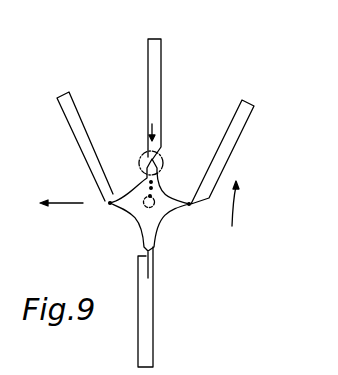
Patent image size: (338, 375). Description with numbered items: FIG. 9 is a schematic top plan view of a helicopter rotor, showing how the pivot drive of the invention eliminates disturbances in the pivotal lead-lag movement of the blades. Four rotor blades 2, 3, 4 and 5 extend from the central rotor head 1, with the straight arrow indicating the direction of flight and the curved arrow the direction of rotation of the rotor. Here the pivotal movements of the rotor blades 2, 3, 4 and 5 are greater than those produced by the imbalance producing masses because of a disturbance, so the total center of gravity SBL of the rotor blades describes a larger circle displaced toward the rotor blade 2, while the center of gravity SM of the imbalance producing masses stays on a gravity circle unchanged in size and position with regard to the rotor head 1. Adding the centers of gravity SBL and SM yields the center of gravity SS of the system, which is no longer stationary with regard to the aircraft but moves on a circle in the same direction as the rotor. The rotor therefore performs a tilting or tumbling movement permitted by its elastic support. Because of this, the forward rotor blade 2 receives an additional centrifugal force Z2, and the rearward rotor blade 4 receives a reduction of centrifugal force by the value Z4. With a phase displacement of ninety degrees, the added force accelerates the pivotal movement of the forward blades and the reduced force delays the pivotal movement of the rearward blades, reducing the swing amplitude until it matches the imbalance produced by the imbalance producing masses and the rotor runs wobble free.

The rotor head 1 is at (163, 204).
The rotor blade 2 is at (157, 52).
The rotor blade 3 is at (246, 110).
The rotor blade 4 is at (147, 340).
The rotor blade 5 is at (65, 100).
The additional centrifugal force Z2 is at (147, 138).
The reduction of centrifugal force Z4 is at (153, 264).
The total center of gravity of the rotor blades SBL is at (154, 172).
The center of gravity of the system SS is at (153, 184).
The center of gravity of the imbalance producing masses SM is at (150, 196).